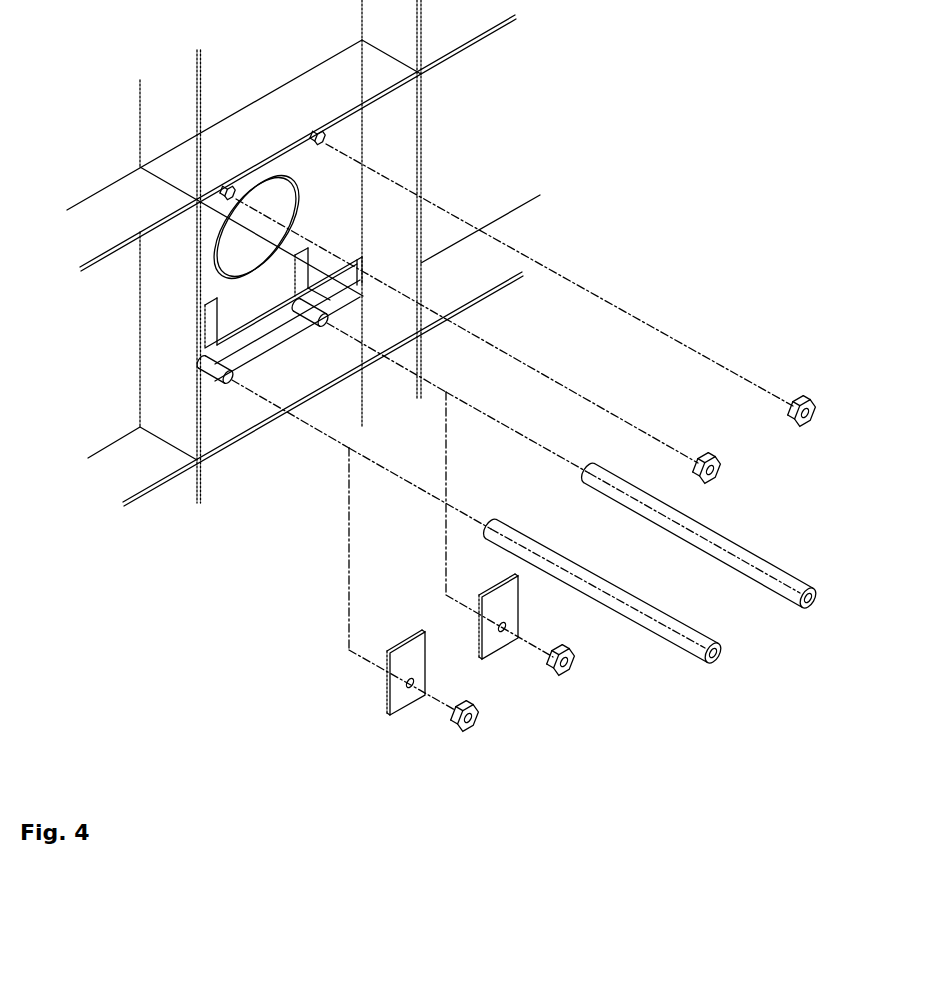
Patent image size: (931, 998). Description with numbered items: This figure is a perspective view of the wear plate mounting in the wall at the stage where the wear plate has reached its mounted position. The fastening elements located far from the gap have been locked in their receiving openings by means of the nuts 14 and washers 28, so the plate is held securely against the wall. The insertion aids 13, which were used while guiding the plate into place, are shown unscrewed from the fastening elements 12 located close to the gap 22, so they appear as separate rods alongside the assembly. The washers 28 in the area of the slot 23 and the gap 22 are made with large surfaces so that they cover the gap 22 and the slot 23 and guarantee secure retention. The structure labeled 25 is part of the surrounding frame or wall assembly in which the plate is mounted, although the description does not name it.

The upright frame 25 is at (172, 153).
The slot 23 is at (303, 268).
The gap 22 is at (328, 283).
The fastening elements located close to the gap 12 is at (322, 326).
The insertion aids 13 is at (705, 628).
The nuts 14 is at (722, 480).
The washers 28 is at (702, 453).